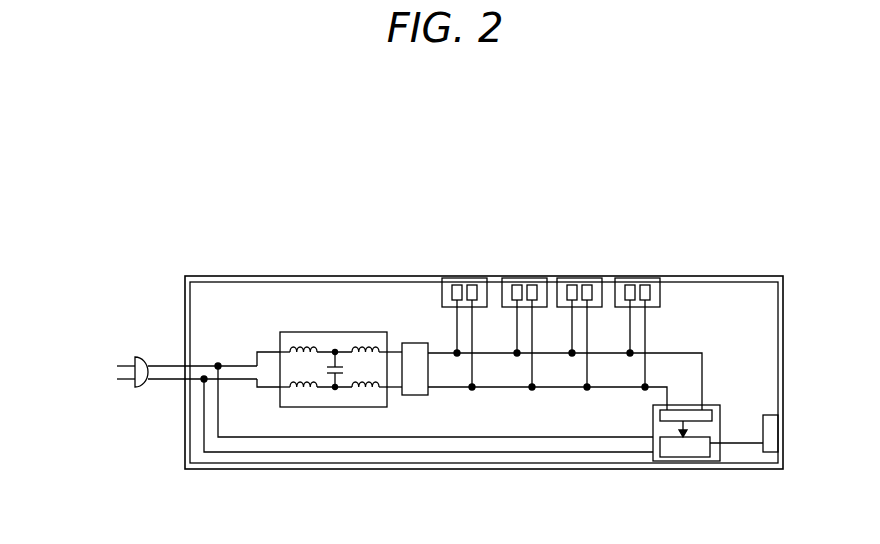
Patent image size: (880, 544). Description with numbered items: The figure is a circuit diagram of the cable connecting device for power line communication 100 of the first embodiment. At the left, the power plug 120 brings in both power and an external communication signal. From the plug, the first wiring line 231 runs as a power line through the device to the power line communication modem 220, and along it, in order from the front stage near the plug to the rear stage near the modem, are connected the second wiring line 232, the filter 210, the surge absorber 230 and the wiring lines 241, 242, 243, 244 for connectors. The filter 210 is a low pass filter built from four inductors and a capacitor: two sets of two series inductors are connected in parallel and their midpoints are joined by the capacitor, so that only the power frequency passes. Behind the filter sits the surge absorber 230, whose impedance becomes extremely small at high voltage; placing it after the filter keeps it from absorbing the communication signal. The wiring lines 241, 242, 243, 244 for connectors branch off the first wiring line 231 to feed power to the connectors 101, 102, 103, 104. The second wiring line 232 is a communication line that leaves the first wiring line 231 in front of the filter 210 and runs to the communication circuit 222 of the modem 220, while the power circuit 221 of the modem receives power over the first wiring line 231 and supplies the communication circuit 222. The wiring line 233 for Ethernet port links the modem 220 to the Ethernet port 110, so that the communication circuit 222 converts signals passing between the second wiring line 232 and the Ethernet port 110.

The cable connecting device for power line communication 100 is at (98, 134).
The Ethernet port 110 is at (776, 425).
The power plug 120 is at (133, 366).
The connector 101 is at (483, 282).
The connector 102 is at (543, 287).
The connector 103 is at (595, 285).
The connector 104 is at (655, 287).
The filter 210 is at (333, 338).
The power line communication modem 220 is at (678, 440).
The power circuit 221 is at (713, 407).
The communication circuit 222 is at (705, 450).
The surge absorber 230 is at (418, 388).
The first wiring line 231 is at (646, 387).
The second wiring line 232 is at (307, 438).
The wiring line for Ethernet port 233 is at (752, 444).
The wiring line for connectors 241 is at (472, 328).
The wiring line for connectors 242 is at (515, 338).
The wiring line for connectors 243 is at (587, 328).
The wiring line for connectors 244 is at (630, 327).